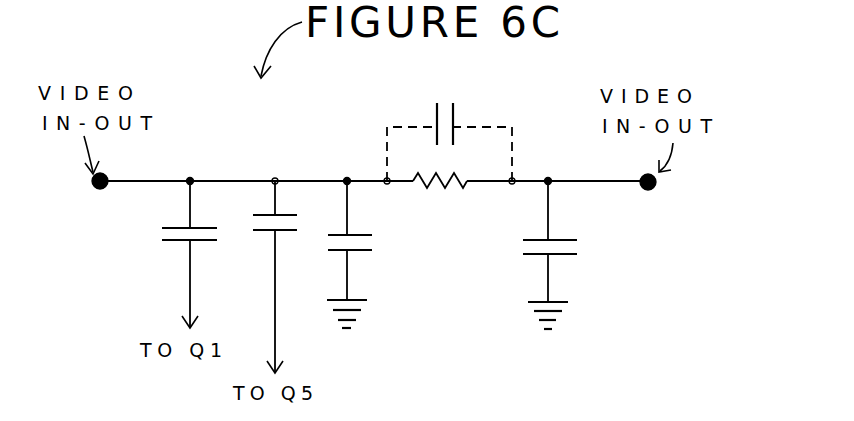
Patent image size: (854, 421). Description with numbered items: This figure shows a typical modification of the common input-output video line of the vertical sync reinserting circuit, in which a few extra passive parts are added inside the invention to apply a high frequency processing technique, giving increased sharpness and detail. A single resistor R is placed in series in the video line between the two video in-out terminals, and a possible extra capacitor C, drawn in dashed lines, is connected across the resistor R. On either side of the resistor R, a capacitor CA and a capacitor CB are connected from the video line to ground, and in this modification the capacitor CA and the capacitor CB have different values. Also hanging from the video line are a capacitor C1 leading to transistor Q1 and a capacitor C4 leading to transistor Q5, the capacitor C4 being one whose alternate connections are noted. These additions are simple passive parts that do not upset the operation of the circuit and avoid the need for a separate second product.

The capacitor C1 is at (175, 249).
The capacitor C4 is at (258, 243).
The capacitor CA is at (353, 263).
The capacitor CB is at (560, 264).
The capacitor C is at (426, 109).
The resistor R is at (456, 194).